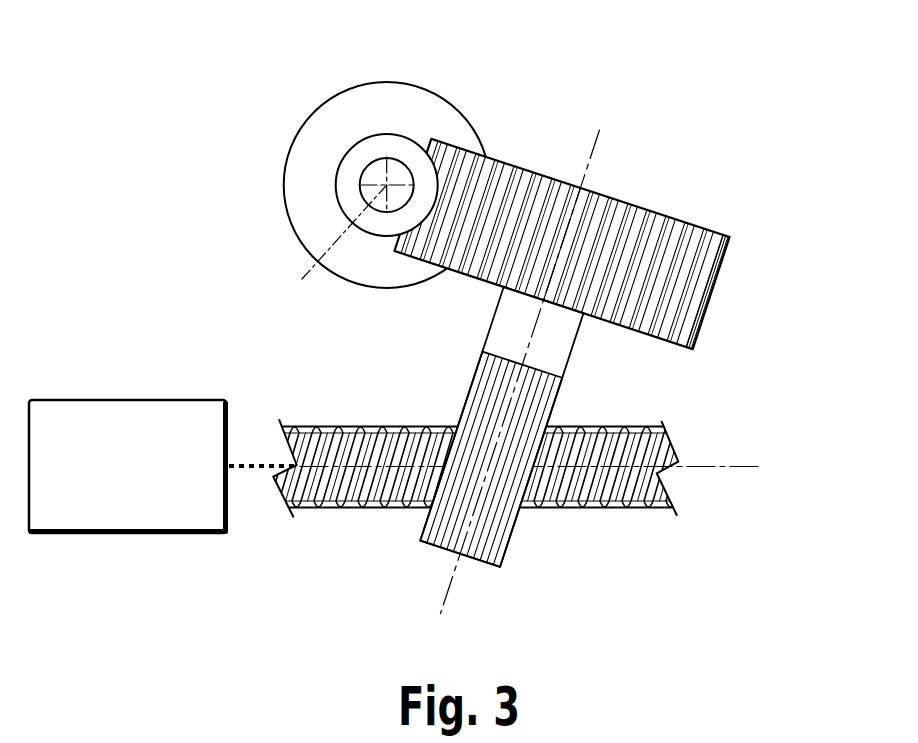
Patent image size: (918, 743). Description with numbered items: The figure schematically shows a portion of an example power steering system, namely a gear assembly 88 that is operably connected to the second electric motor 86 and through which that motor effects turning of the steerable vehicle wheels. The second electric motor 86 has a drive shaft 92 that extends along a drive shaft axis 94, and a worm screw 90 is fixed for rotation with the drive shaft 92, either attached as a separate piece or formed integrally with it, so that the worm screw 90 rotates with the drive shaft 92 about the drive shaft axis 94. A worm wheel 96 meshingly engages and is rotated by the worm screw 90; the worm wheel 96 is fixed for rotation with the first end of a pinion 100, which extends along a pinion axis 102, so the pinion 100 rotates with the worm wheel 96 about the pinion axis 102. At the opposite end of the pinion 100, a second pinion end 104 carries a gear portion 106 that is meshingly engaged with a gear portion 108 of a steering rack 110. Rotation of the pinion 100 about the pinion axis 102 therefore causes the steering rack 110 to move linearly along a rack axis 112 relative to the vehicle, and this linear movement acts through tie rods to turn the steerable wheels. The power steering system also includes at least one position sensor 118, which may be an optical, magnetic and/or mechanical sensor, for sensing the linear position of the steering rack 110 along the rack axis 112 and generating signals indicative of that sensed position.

The second electric motor 86 is at (328, 97).
The gear assembly 88 is at (645, 163).
The worm screw 90 is at (407, 147).
The drive shaft 92 is at (396, 102).
The drive shaft axis 94 is at (341, 227).
The worm wheel 96 is at (720, 235).
The pinion 100 is at (486, 361).
The pinion axis 102 is at (445, 598).
The second pinion end 104 is at (438, 520).
The gear portion 106 is at (483, 540).
The gear portion 108 is at (612, 478).
The steering rack 110 is at (653, 450).
The rack axis 112 is at (733, 467).
The position sensor 118 is at (95, 423).